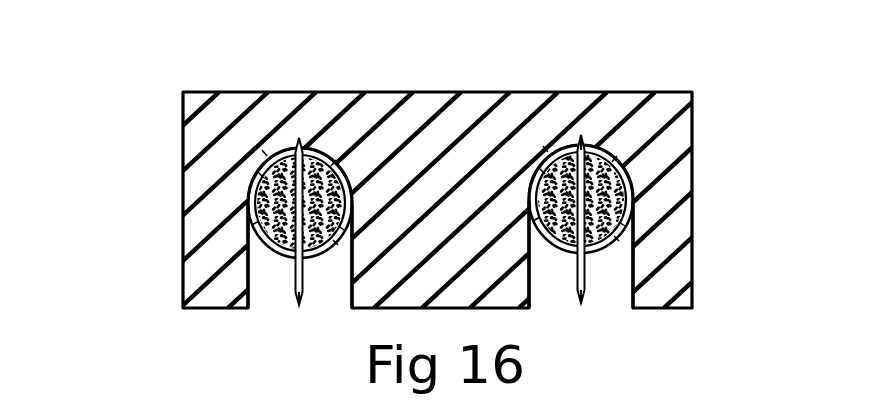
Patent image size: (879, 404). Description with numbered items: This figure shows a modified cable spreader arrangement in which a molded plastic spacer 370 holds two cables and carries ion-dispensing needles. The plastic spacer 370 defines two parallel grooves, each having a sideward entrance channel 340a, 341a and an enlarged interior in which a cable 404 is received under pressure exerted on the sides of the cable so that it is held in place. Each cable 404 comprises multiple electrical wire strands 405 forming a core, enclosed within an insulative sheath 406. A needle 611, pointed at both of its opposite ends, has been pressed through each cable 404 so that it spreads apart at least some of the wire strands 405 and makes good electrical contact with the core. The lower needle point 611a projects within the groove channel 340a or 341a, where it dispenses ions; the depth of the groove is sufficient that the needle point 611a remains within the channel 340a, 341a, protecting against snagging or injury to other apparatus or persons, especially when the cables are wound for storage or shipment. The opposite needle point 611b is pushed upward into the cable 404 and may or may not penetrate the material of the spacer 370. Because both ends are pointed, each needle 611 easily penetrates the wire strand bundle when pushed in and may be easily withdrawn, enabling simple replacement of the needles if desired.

The plastic spacer 370 is at (461, 86).
The cable 404 is at (240, 188).
The electrical wire strands 405 is at (266, 213).
The insulative sheath 406 is at (250, 172).
The needle 611 is at (598, 266).
The needle point 611a is at (298, 297).
The needle point 611b is at (612, 118).
The entrance channel 341a is at (352, 309).
The entrance channel 340a is at (633, 300).